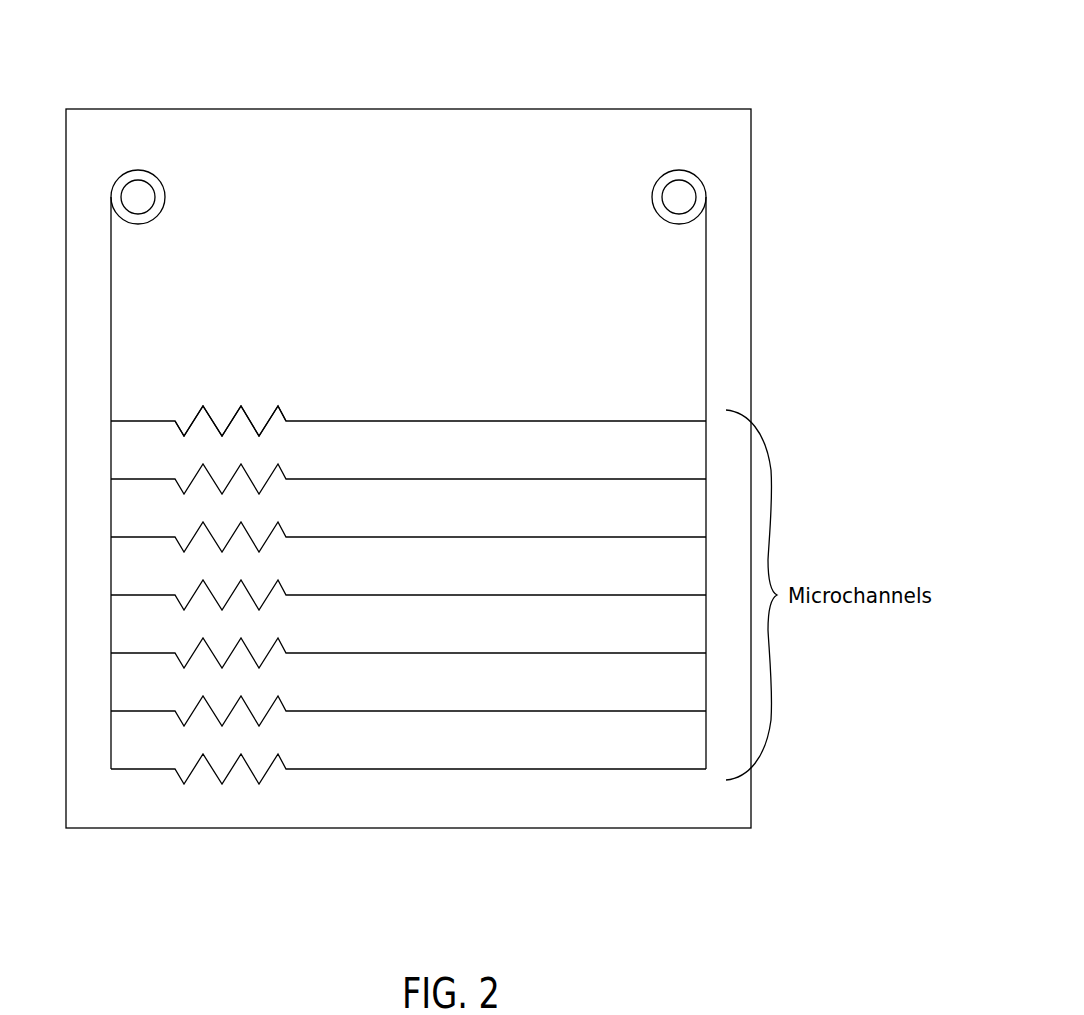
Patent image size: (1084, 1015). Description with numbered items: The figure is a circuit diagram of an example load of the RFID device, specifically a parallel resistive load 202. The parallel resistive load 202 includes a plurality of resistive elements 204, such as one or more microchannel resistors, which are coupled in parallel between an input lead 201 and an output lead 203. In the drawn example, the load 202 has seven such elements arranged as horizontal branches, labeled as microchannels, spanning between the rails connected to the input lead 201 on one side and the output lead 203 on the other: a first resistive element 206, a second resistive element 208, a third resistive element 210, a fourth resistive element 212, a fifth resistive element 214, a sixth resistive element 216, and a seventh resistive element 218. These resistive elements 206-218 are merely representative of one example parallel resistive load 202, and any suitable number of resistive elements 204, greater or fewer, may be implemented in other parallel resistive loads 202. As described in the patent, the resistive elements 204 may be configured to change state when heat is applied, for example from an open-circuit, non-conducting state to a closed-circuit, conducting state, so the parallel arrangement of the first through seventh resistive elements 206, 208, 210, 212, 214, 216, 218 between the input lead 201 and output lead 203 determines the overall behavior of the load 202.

The input lead 201 is at (149, 172).
The parallel resistive load 202 is at (555, 57).
The output lead 203 is at (667, 172).
The resistive elements 204 is at (258, 390).
The first resistive element 206 is at (284, 415).
The second resistive element 208 is at (284, 473).
The third resistive element 210 is at (284, 531).
The fourth resistive element 212 is at (284, 589).
The fifth resistive element 214 is at (284, 647).
The sixth resistive element 216 is at (284, 705).
The seventh resistive element 218 is at (284, 763).